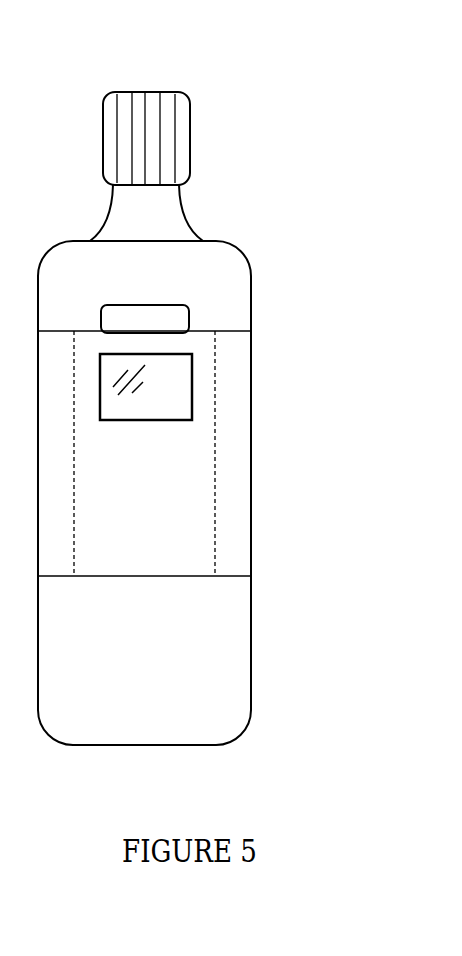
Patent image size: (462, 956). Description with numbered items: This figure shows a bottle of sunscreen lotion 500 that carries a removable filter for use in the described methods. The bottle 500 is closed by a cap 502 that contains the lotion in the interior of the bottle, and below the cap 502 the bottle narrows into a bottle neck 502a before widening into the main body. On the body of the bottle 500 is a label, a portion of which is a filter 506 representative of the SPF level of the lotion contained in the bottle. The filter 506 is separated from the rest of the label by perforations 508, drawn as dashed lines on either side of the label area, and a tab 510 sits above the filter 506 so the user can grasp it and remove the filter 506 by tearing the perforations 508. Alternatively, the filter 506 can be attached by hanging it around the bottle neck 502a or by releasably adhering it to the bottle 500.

The bottle of sunscreen lotion 500 is at (241, 392).
The cap 502 is at (190, 144).
The bottle neck 502a is at (188, 211).
The filter 506 is at (196, 387).
The perforations 508 is at (78, 556).
The tab 510 is at (186, 305).